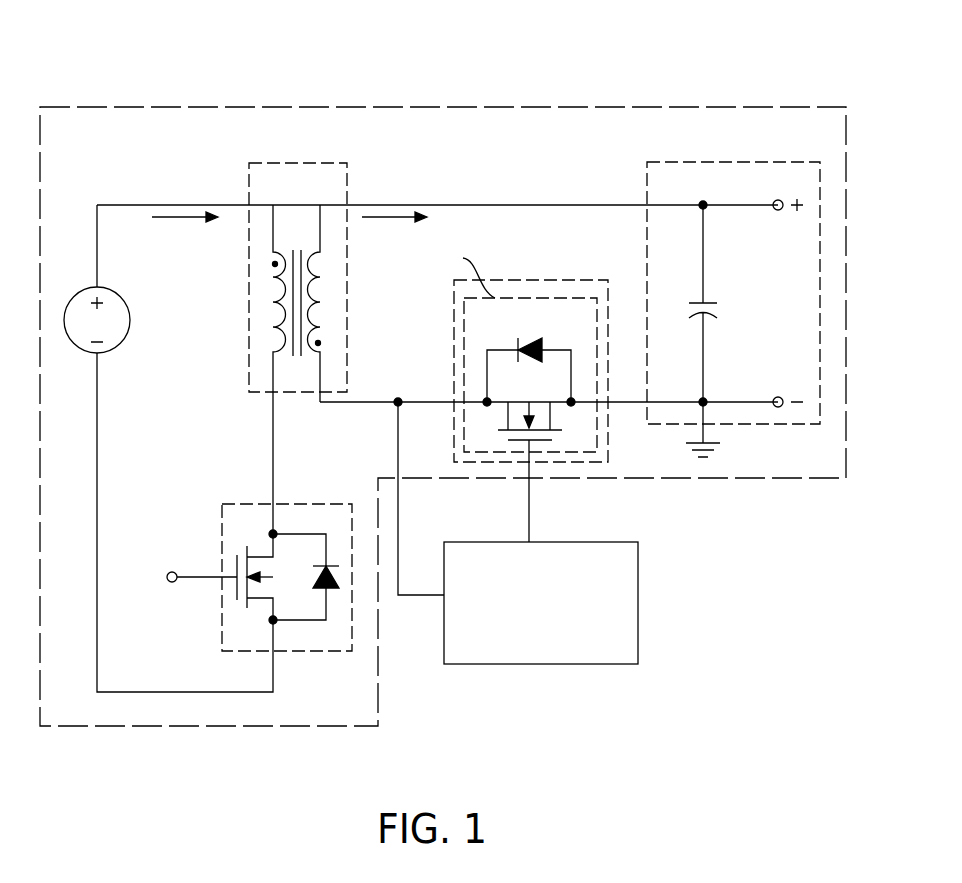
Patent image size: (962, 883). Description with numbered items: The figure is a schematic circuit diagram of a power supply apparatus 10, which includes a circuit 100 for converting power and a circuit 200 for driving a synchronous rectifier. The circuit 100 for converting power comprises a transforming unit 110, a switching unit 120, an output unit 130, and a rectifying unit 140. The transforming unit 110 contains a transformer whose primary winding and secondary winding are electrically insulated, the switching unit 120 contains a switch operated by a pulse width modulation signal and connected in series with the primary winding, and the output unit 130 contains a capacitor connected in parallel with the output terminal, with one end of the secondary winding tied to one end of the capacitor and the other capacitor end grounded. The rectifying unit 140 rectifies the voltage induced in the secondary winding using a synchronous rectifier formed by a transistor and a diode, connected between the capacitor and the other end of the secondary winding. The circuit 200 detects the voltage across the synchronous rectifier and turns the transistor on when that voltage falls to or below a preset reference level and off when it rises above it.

The power supply apparatus 10 is at (457, 37).
The circuit for converting power 100 is at (800, 107).
The transforming unit 110 is at (300, 163).
The switching unit 120 is at (287, 504).
The output unit 130 is at (775, 162).
The rectifying unit 140 is at (525, 280).
The circuit for driving the synchronous rectifier 200 is at (567, 542).